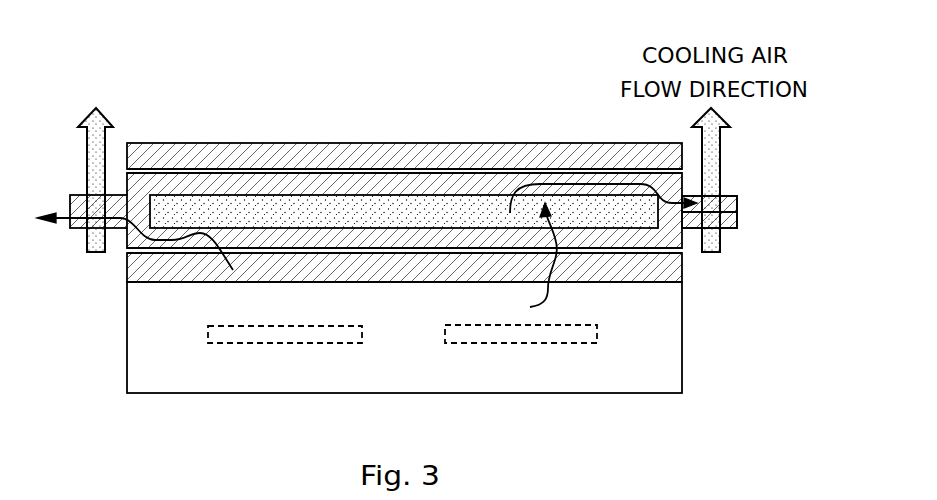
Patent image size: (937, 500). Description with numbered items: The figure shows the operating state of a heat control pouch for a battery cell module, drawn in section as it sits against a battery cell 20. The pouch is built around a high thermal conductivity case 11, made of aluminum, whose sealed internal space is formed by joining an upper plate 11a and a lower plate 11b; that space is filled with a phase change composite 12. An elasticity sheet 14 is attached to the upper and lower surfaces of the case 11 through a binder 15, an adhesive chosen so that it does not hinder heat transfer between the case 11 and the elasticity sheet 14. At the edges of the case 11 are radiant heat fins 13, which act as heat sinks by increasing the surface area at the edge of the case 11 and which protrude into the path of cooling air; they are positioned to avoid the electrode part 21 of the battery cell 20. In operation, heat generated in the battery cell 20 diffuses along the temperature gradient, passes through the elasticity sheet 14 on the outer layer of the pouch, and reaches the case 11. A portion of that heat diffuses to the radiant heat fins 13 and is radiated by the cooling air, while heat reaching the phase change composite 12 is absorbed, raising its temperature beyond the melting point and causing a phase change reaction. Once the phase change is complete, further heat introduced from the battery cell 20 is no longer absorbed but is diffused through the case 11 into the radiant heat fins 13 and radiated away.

The high thermal conductivity case 11 is at (795, 214).
The upper plate 11a is at (742, 203).
The lower plate 11b is at (765, 232).
The phase change composite 12 is at (620, 212).
The radiant heat fin 13 is at (118, 203).
The elasticity sheet 14 is at (215, 302).
The binder 15 is at (420, 252).
The battery cell 20 is at (158, 362).
The electrode part 21 is at (235, 337).